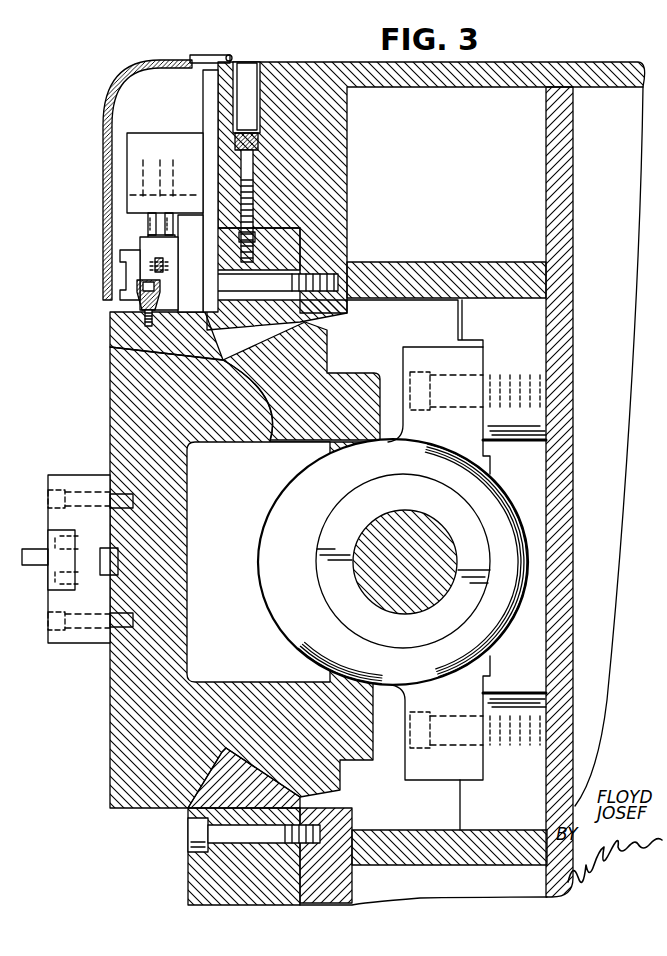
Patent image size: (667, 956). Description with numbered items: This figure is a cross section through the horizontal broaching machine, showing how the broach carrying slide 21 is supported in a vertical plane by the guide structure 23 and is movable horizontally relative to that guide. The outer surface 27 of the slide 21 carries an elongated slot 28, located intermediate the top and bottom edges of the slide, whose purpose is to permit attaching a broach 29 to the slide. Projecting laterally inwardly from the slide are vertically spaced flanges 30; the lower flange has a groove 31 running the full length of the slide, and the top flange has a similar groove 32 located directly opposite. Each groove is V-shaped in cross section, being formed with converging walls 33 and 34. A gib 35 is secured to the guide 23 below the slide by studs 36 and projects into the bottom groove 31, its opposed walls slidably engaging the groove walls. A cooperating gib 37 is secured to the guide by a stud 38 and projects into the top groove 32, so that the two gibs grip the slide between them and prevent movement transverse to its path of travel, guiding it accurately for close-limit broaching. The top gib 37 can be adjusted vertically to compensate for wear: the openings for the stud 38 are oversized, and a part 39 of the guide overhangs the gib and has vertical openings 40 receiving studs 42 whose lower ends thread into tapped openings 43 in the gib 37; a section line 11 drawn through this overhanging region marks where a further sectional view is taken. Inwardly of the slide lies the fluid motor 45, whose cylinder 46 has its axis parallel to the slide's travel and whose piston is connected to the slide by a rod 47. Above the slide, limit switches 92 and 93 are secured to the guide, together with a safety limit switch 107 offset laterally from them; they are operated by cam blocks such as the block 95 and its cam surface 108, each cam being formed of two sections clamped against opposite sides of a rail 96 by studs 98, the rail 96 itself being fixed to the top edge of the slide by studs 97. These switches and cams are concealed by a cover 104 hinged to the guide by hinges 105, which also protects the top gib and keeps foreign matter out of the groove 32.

The section line 11- 11 is at (247, 38).
The broach carrying slide 21 is at (108, 683).
The guide structure 23 is at (578, 250).
The outer surface 27 is at (109, 442).
The elongated slot 28 is at (110, 570).
The broach 29 is at (86, 636).
The flanges 30 is at (228, 432).
The groove 31 is at (218, 757).
The groove 32 is at (268, 434).
The converging wall 33 is at (215, 331).
The converging wall 34 is at (302, 318).
The gib 35 is at (188, 880).
The studs 36 is at (312, 835).
The cooperating gib 37 is at (287, 247).
The stud 38 is at (348, 264).
The part of the guide 39 is at (298, 190).
The openings 40 is at (255, 118).
The studs 42 is at (253, 176).
The tapped openings 43 is at (240, 243).
The fluid motor 45 is at (530, 576).
The cylinder 46 is at (504, 494).
The rod 47 is at (404, 518).
The limit switch 92 is at (128, 165).
The limit switch 93 is at (172, 232).
The cam block 95 is at (180, 237).
The rail 96 is at (143, 292).
The studs 97 is at (148, 318).
The studs 98 is at (121, 263).
The cover 104 is at (101, 120).
The hinges 105 is at (208, 55).
The safety limit switch 107 is at (146, 224).
The cam surface 108 is at (148, 240).